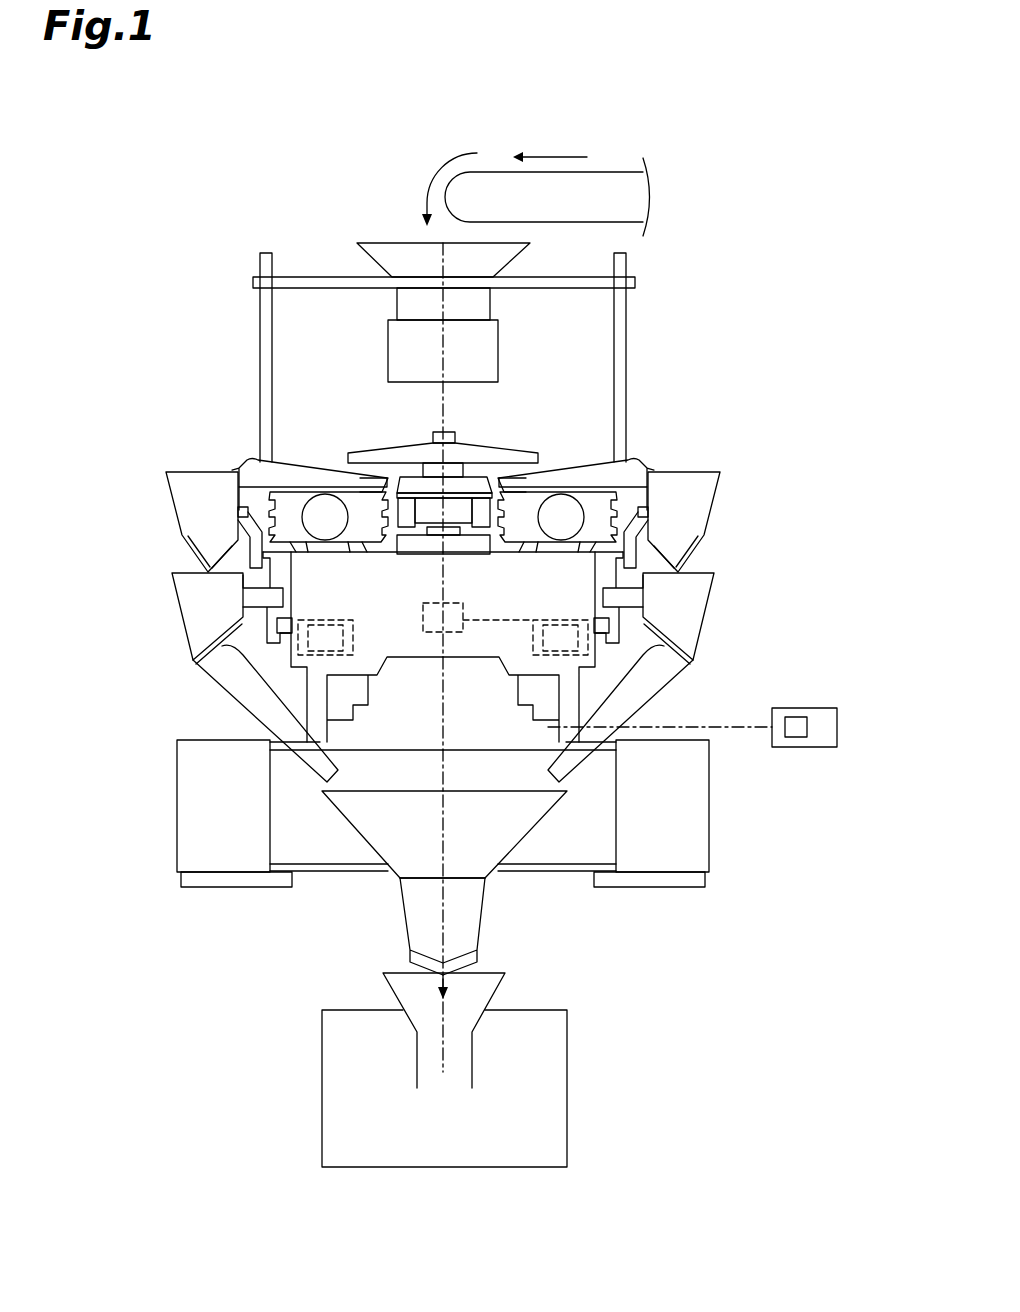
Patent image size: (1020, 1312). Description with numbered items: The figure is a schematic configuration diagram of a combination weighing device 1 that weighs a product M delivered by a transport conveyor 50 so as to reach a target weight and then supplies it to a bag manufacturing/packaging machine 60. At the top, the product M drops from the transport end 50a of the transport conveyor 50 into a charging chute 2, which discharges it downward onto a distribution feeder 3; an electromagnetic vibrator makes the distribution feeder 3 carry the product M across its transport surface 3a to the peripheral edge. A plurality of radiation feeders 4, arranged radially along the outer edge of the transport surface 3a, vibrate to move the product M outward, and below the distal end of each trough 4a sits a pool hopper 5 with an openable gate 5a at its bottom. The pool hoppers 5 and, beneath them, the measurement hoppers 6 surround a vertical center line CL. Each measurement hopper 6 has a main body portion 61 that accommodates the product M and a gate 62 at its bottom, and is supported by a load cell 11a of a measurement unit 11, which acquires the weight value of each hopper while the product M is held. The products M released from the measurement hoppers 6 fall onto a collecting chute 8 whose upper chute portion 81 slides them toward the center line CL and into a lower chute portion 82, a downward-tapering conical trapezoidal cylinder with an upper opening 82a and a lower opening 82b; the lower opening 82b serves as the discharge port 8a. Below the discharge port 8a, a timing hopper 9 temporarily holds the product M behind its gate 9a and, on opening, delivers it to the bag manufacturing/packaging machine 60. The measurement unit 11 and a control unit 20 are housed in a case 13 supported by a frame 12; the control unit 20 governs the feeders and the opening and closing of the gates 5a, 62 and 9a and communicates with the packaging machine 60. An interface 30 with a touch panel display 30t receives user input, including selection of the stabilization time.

The combination weighing device 1 is at (493, 648).
The charging chute 2 is at (390, 256).
The distribution feeder 3 is at (438, 436).
The transport surface 3a is at (380, 452).
The radiation feeder 4 is at (443, 509).
The trough 4a is at (282, 470).
The pool hopper 5 is at (444, 522).
The gate 5a is at (192, 557).
The measurement hopper 6 is at (443, 618).
The main body portion 61 is at (190, 613).
The gate 62 is at (210, 641).
The collecting chute 8 is at (450, 796).
The upper chute portion 81 is at (240, 697).
The lower chute portion 82 is at (457, 850).
The upper opening 82a is at (415, 791).
The lower opening 82b is at (389, 913).
The discharge port 8a is at (428, 884).
The timing hopper 9 is at (446, 1049).
The gate 9a is at (431, 975).
The measurement unit 11 is at (443, 606).
The load cell 11a is at (355, 622).
The frame 12 is at (698, 788).
The case 13 is at (452, 645).
The control unit 20 is at (435, 635).
The interface 30 is at (728, 759).
The touch panel display 30t is at (796, 748).
The transport conveyor 50 is at (547, 174).
The transport end 50a is at (458, 195).
The bag manufacturing/packaging machine 60 is at (555, 1072).
The product M is at (428, 174).
The center line CL is at (447, 822).